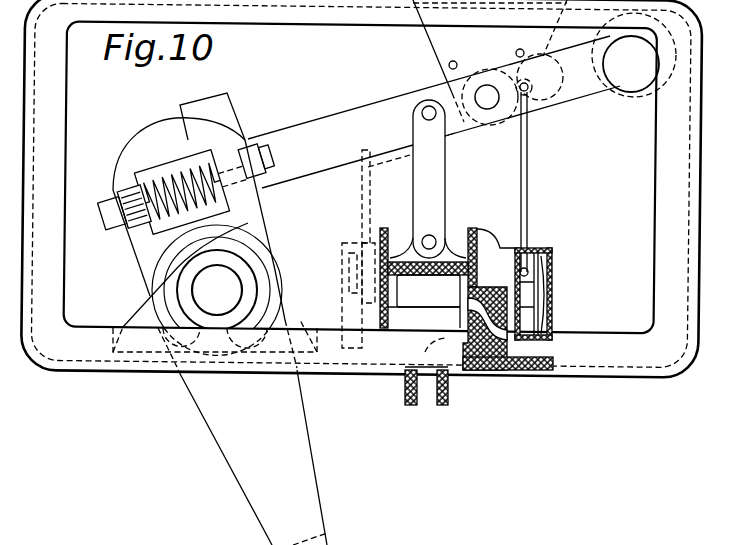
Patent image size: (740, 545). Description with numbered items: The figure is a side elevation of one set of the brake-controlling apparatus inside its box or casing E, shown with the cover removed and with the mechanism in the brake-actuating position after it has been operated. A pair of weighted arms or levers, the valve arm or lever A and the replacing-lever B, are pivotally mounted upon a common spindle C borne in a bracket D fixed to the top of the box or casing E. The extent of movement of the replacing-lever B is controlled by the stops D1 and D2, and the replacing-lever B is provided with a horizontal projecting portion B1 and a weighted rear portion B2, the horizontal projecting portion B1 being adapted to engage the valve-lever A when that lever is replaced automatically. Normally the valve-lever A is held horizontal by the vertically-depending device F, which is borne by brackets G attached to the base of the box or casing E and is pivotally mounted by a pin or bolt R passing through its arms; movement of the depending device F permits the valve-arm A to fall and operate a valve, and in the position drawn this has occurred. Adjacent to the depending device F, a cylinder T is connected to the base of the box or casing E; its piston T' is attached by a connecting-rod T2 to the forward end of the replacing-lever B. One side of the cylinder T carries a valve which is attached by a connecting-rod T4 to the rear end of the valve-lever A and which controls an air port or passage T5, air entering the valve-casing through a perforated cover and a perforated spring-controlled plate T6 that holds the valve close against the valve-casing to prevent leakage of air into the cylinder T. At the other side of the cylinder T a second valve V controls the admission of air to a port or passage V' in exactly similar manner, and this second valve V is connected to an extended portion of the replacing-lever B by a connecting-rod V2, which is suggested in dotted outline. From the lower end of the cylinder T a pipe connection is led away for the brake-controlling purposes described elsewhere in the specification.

The valve arm or lever A is at (305, 137).
The replacing-lever B is at (563, 72).
The horizontal projecting portion B1 is at (455, 146).
The weighted rear portion B2 is at (634, 58).
The common spindle C is at (495, 100).
The bracket D is at (490, 61).
The stop D1 is at (500, 49).
The stop D2 is at (388, 68).
The box or casing E is at (361, 188).
The vertically-depending device F is at (253, 402).
The brackets G is at (143, 306).
The pin or bolt R is at (192, 299).
The cylinder T is at (466, 300).
The piston T' is at (428, 291).
The connecting-rod T2 is at (429, 179).
The connecting-rod T4 is at (527, 157).
The air port or passage T5 is at (560, 256).
The perforated spring-controlled plate T6 is at (557, 308).
The second valve V is at (340, 295).
The port or passage V' is at (422, 319).
The connecting-rod V2 is at (352, 196).